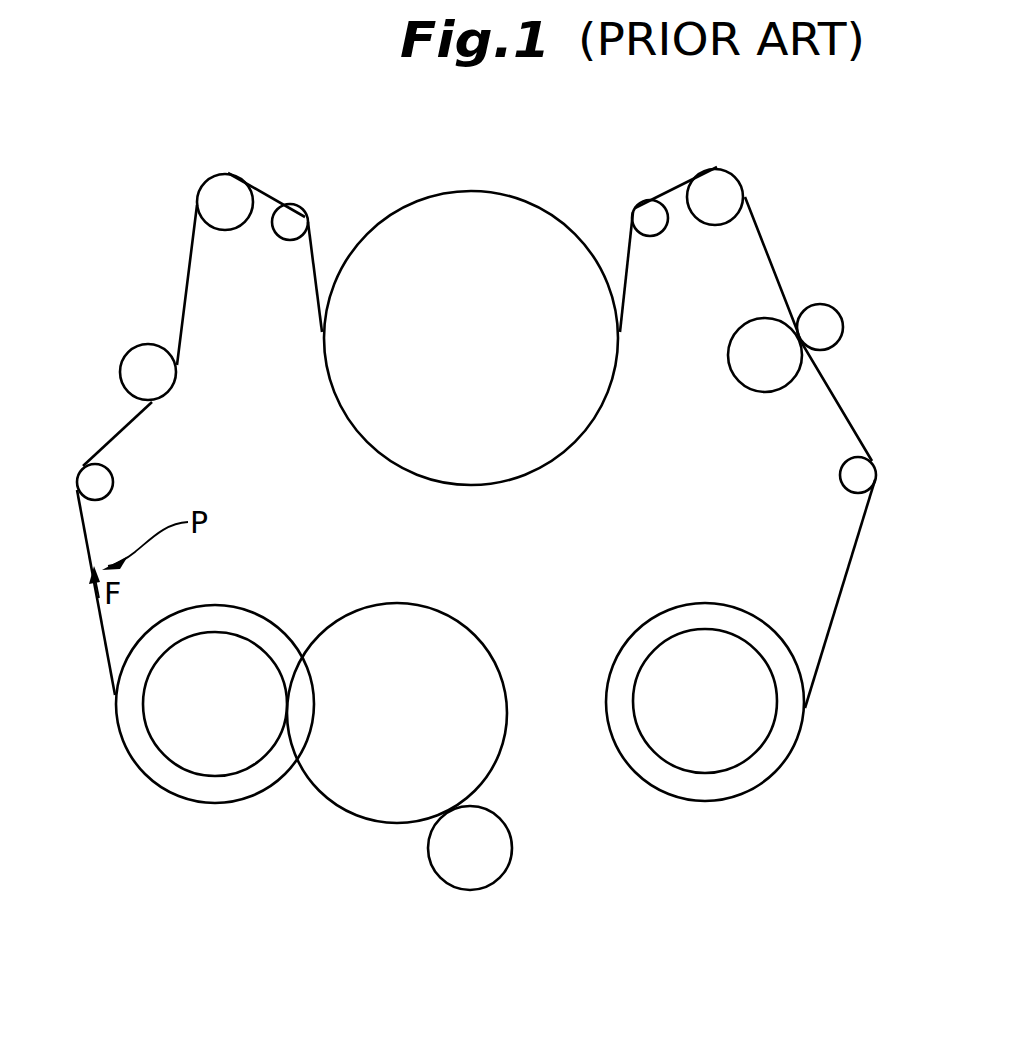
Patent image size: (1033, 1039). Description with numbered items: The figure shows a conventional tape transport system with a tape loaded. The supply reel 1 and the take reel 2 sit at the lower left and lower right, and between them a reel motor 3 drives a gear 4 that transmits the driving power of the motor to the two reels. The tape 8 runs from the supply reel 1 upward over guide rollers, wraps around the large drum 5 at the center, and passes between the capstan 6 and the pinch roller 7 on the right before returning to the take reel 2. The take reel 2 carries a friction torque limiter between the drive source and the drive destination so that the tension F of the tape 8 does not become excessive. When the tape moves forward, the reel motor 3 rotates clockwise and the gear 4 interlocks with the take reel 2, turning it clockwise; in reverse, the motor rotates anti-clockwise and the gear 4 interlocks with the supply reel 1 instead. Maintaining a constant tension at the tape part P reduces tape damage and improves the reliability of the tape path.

The supply reel 1 is at (208, 750).
The take reel 2 is at (685, 742).
The reel motor 3 is at (468, 865).
The gear 4 is at (407, 618).
The drum 5 is at (458, 202).
The capstan 6 is at (820, 310).
The pinch roller 7 is at (755, 372).
The tape 8 is at (190, 253).